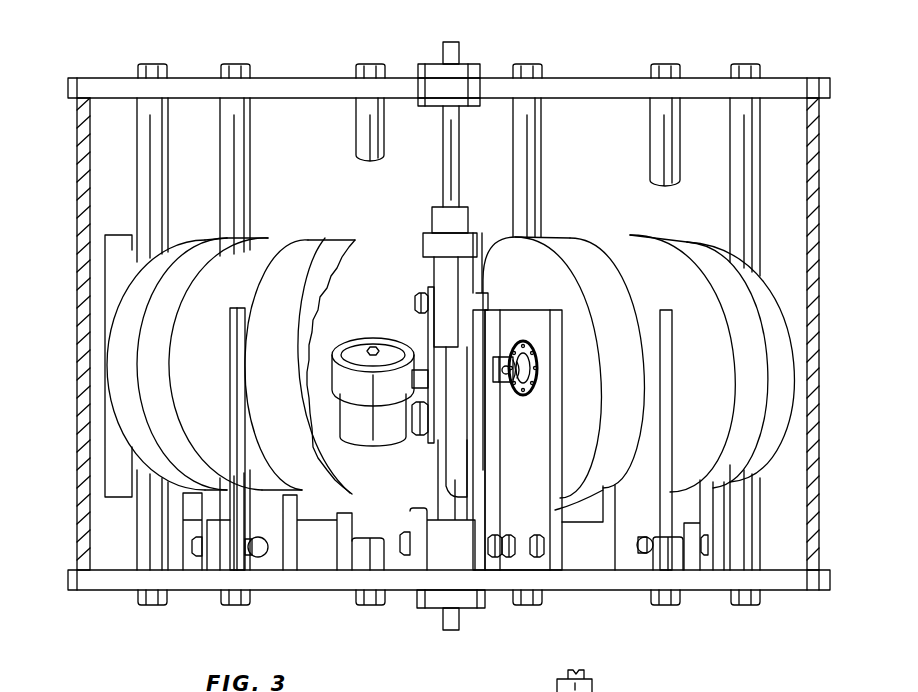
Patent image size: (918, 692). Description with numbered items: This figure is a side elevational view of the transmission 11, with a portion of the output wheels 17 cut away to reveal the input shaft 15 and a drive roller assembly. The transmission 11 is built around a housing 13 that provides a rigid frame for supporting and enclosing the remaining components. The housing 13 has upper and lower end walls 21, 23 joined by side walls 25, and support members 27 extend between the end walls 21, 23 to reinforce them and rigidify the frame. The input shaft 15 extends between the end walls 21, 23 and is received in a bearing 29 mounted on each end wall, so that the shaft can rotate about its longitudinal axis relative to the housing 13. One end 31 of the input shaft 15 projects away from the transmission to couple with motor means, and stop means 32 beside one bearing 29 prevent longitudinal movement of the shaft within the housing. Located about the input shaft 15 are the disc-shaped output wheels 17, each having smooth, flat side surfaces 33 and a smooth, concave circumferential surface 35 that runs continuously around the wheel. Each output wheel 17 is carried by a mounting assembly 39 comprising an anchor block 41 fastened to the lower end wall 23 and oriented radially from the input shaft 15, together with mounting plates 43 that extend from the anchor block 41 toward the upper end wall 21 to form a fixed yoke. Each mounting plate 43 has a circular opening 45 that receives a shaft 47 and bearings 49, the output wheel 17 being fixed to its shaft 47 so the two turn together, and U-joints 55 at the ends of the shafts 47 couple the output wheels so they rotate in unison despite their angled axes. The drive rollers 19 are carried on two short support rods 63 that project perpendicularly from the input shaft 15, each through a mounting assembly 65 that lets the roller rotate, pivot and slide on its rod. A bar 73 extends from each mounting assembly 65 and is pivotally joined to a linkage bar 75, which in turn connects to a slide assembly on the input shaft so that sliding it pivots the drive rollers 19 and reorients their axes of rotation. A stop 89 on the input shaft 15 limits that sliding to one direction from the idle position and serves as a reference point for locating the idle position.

The transmission 11 is at (177, 78).
The housing 13 is at (620, 88).
The input shaft 15 is at (442, 112).
The output wheels 17 is at (132, 304).
The drive rollers 19 is at (355, 342).
The upper end wall 21 is at (548, 88).
The lower end wall 23 is at (780, 590).
The side walls 25 is at (816, 152).
The support members 27 is at (752, 138).
The bearing 29 is at (471, 66).
The end of the shaft 31 is at (456, 622).
The stop means 32 is at (442, 502).
The side surfaces 33 is at (175, 400).
The circumferential surface 35 is at (145, 357).
The mounting assembly 39 is at (572, 568).
The anchor block 41 is at (590, 572).
The mounting plates 43 is at (555, 510).
The circular opening 45 is at (530, 390).
The shaft 47 is at (535, 368).
The bearings 49 is at (525, 342).
The U-joints 55 is at (500, 388).
The support rods 63 is at (446, 450).
The mounting assembly 65 is at (360, 436).
The bar 73 is at (430, 440).
The linkage bar 75 is at (424, 330).
The stop 89 is at (596, 688).